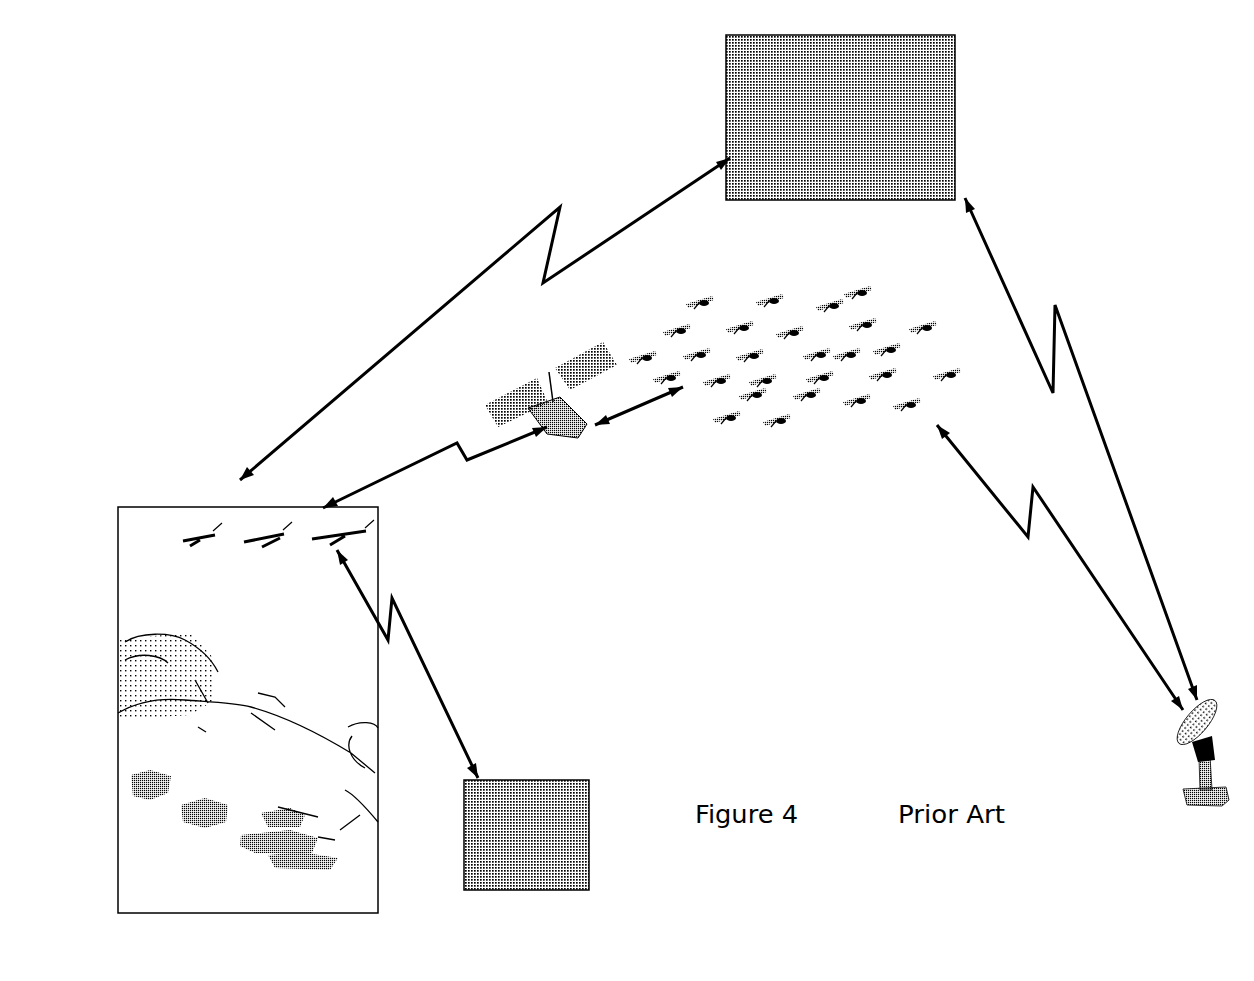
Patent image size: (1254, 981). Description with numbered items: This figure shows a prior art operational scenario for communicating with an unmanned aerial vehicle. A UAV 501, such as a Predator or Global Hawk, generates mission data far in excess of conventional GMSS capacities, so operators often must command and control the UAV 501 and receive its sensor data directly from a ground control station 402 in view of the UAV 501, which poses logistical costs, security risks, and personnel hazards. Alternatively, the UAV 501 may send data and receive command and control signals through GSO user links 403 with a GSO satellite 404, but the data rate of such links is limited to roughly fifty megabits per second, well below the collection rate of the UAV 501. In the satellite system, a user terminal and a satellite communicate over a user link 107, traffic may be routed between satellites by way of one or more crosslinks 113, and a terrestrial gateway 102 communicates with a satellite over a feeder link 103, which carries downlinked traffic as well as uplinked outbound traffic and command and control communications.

The GSO satellite 404 is at (936, 170).
The GSO user links 403 is at (399, 341).
The user link 107 is at (466, 459).
The crosslinks 113 is at (626, 416).
The feeder link 103 is at (1074, 553).
The terrestrial gateway 102 is at (1194, 771).
The ground control station 402 is at (540, 780).
The UAV 501 is at (214, 532).